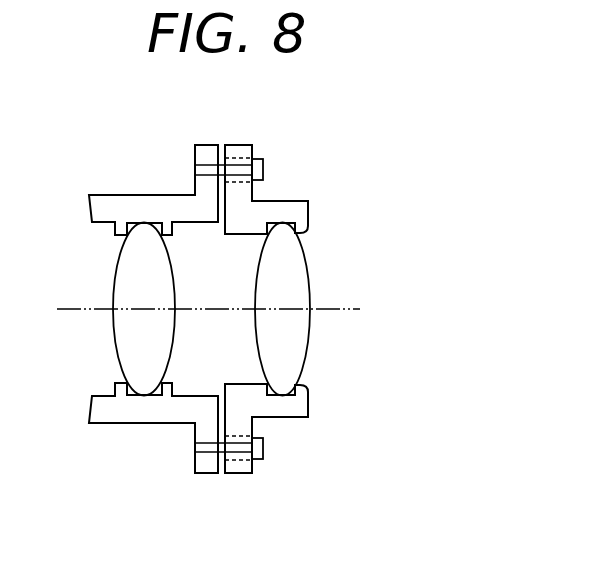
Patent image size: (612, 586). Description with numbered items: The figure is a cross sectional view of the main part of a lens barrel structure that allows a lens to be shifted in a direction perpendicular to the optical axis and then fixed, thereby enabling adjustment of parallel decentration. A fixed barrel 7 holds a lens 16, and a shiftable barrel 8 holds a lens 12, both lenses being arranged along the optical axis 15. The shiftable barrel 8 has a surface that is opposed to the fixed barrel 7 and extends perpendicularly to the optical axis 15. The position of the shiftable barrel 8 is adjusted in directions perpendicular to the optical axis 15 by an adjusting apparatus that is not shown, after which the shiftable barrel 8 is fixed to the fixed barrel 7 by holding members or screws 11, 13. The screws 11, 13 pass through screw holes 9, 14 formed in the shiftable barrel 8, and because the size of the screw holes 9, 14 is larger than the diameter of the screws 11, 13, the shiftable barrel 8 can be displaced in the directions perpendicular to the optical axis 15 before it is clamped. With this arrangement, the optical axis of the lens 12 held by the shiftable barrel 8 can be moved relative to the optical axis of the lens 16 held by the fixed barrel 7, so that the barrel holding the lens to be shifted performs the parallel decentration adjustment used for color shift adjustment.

The fixed barrel 7 is at (131, 195).
The shiftable barrel 8 is at (308, 212).
The screw hole 9 is at (238, 158).
The screw 11 is at (263, 165).
The lens 12 is at (308, 265).
The screw 13 is at (263, 452).
The screw hole 14 is at (237, 460).
The optical axis 15 is at (338, 312).
The lens 16 is at (116, 269).